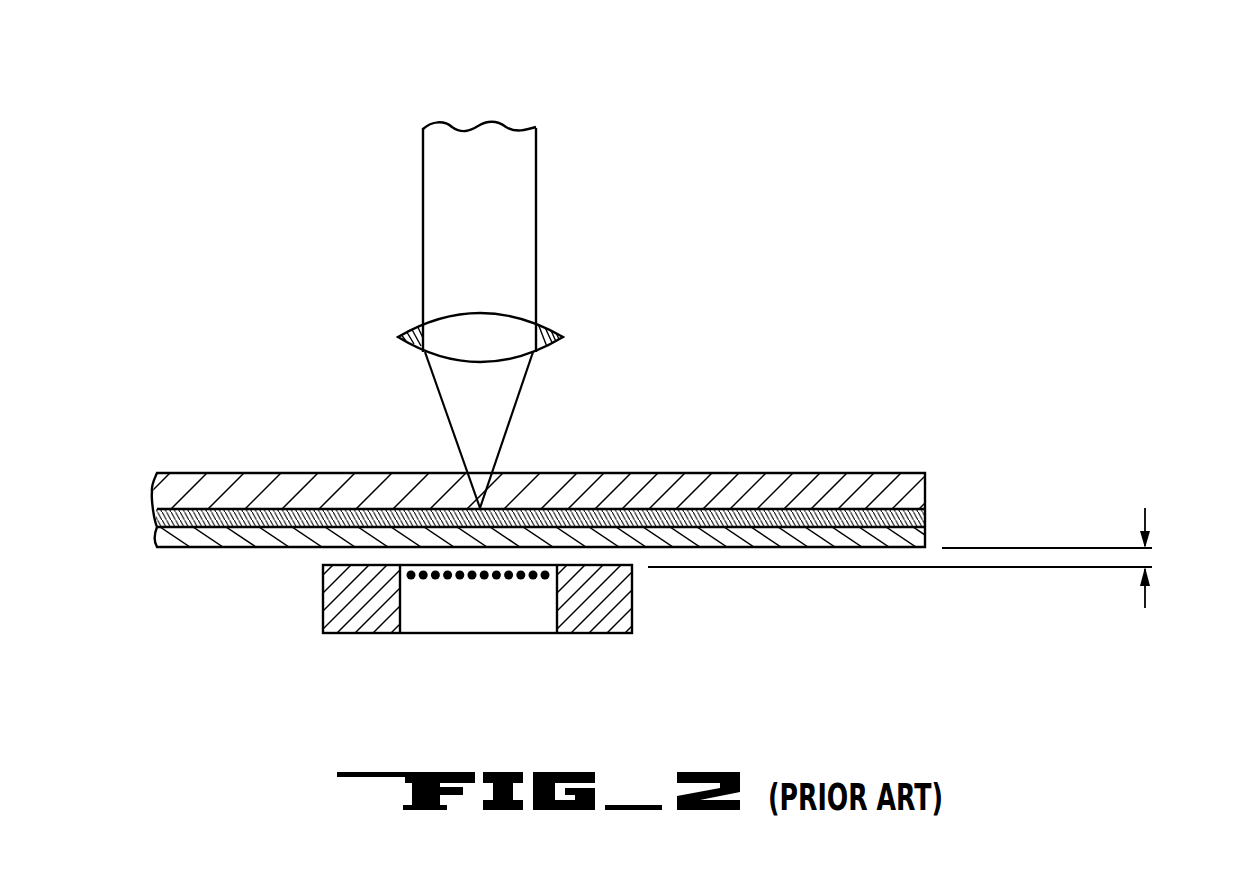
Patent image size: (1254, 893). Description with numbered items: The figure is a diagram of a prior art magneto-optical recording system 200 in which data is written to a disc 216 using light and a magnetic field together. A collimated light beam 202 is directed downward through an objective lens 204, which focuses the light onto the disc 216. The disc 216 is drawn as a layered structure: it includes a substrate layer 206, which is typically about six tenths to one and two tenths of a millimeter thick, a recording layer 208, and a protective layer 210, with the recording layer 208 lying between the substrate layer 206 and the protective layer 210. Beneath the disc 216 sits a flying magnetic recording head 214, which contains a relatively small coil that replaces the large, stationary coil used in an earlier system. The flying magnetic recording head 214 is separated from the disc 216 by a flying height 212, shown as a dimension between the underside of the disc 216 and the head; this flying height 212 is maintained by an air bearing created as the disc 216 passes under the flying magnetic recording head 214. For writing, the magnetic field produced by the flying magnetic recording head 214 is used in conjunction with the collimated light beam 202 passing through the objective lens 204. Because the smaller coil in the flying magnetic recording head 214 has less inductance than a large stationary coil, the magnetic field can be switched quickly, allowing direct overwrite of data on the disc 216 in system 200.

The prior MO recording system 200 is at (942, 43).
The collimated light beam 202 is at (536, 202).
The objective lens 204 is at (410, 328).
The substrate layer 206 is at (925, 490).
The recording layer 208 is at (925, 519).
The protective layer 210 is at (925, 535).
The flying height 212 is at (1147, 598).
The flying magnetic recording head 214 is at (323, 594).
The disc 216 is at (705, 462).